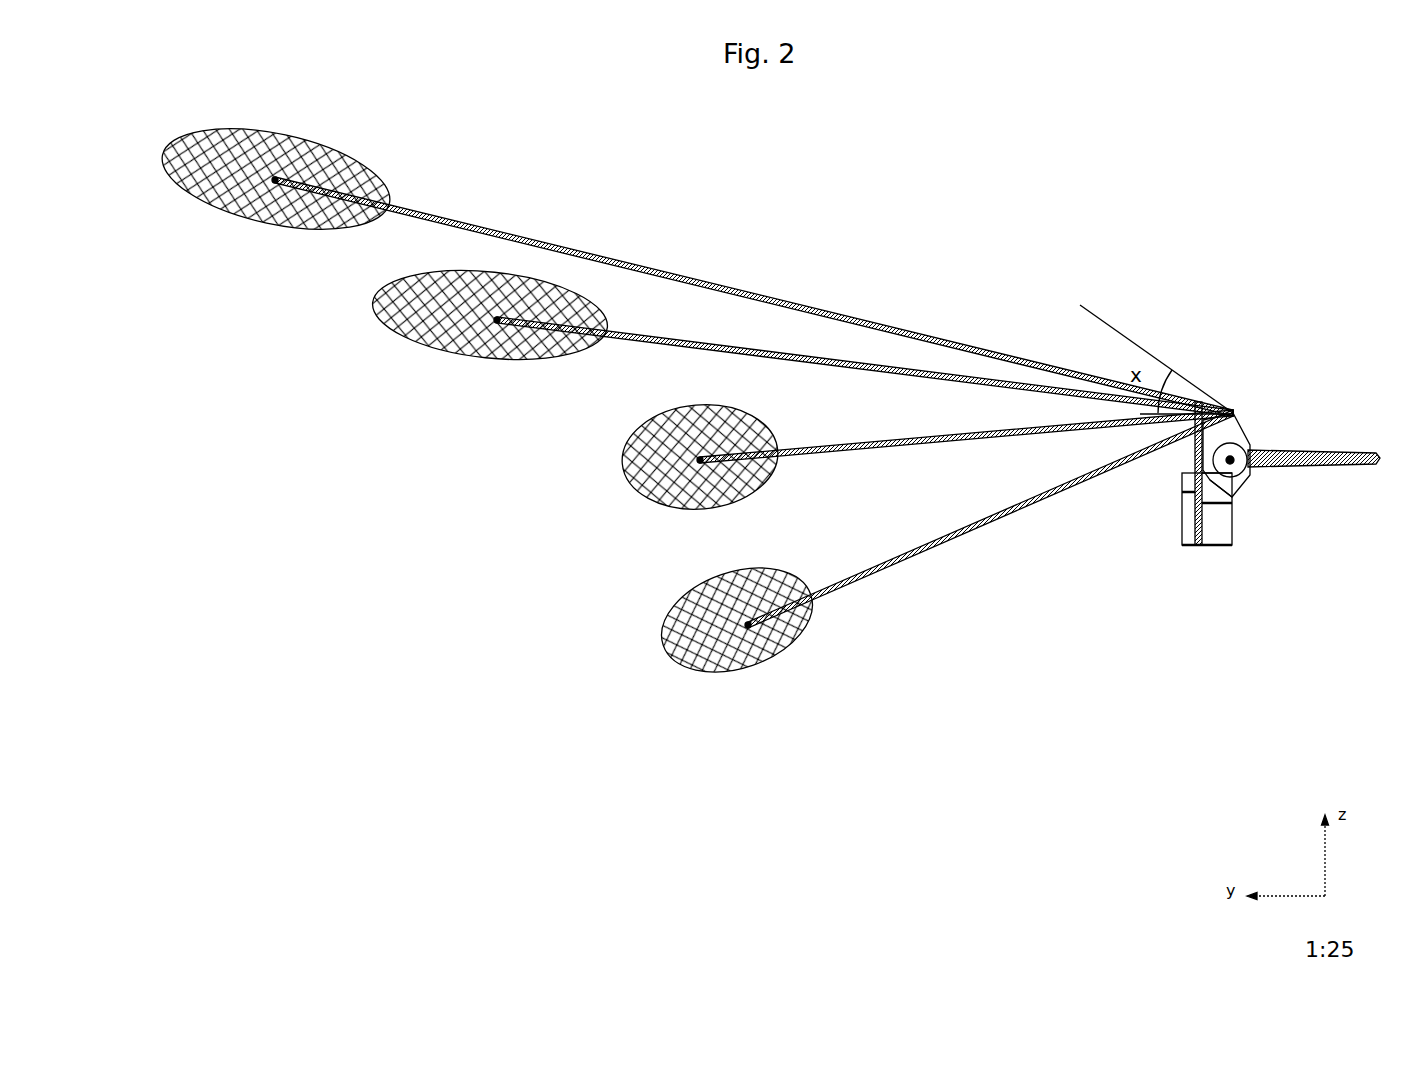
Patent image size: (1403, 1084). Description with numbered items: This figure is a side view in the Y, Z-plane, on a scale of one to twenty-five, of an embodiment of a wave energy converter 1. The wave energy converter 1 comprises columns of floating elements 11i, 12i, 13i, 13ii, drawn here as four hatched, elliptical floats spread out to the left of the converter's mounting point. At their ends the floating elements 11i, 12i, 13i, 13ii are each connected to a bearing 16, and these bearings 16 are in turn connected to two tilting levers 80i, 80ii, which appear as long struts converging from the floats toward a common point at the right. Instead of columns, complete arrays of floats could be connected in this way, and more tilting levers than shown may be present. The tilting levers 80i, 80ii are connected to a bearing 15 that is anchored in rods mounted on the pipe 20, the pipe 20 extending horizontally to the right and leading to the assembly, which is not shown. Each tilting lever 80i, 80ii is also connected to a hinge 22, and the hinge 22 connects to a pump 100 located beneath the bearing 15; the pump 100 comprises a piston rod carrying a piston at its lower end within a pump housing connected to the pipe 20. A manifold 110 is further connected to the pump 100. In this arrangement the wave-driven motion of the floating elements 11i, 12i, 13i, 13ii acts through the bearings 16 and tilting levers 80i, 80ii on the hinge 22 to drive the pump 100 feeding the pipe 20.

The wave energy converter 1 is at (903, 183).
The floating element 11i is at (233, 245).
The floating element 12i is at (378, 343).
The floating element 13i is at (654, 685).
The floating element 13ii is at (601, 512).
The bearing 16 is at (275, 186).
The tilting lever 80i is at (387, 216).
The tilting lever 80ii is at (548, 245).
The hinge 22 is at (1190, 383).
The bearing 15 is at (1235, 388).
The pipe 20 is at (1269, 424).
The pump 100 is at (1197, 581).
The manifold 110 is at (1240, 564).